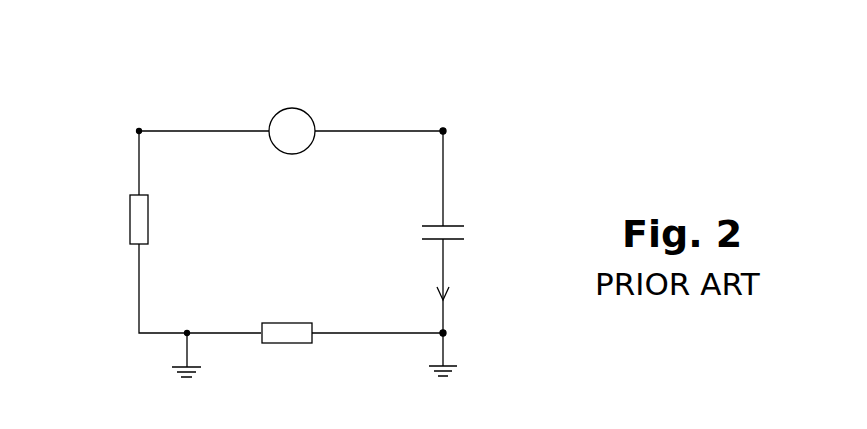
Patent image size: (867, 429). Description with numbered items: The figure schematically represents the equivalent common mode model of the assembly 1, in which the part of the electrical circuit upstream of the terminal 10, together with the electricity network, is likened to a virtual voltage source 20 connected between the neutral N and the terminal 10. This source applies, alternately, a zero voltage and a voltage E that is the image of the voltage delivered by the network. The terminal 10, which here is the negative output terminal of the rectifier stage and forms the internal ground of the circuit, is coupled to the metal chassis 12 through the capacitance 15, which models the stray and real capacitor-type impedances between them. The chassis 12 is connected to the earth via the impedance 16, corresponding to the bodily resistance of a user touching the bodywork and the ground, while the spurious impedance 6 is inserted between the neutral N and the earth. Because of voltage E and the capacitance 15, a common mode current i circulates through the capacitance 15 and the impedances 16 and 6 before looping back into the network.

The assembly 1 is at (123, 85).
The spurious impedance 6 is at (139, 218).
The terminal 10 is at (445, 129).
The metal chassis 12 is at (446, 332).
The capacitance 15 is at (464, 230).
The impedance 16 is at (294, 333).
The virtual voltage source 20 is at (300, 121).